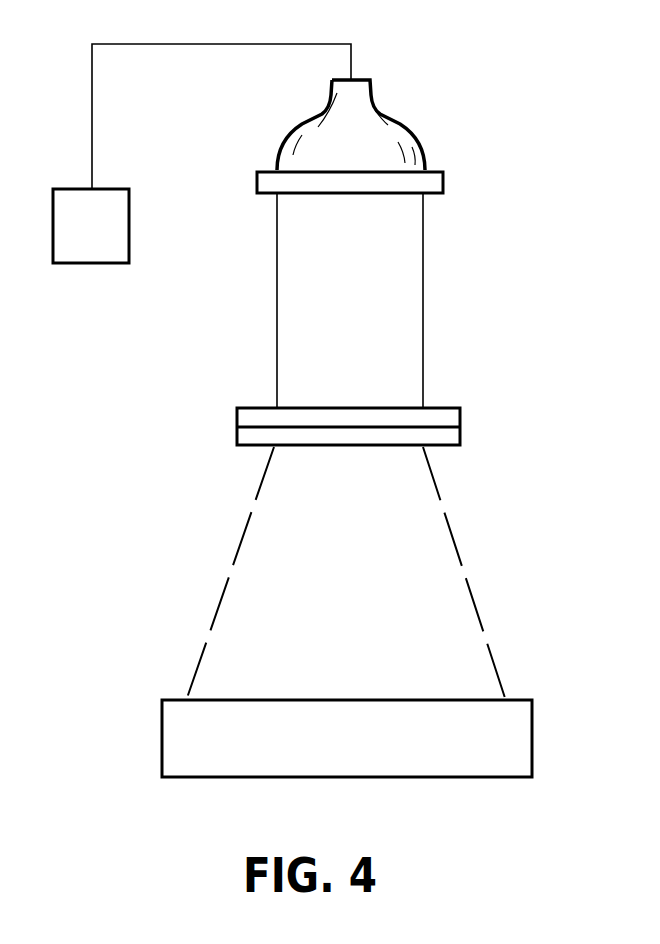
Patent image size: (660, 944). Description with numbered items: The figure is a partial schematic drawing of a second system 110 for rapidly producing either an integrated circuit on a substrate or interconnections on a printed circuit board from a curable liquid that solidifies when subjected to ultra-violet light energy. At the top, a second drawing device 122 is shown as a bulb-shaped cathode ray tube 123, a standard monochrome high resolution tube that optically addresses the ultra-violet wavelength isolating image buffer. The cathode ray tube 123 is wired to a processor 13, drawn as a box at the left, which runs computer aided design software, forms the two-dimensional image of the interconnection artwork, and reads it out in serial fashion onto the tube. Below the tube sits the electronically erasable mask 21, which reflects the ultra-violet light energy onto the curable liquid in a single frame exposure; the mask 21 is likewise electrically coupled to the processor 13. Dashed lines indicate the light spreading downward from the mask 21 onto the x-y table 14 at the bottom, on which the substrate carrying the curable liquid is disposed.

The processor 13 is at (72, 264).
The second drawing device 122 is at (375, 98).
The cathode ray tube 123 is at (443, 182).
The electronically erasable mask 21 is at (460, 430).
The second system 110 is at (452, 518).
The x-y table 14 is at (533, 722).